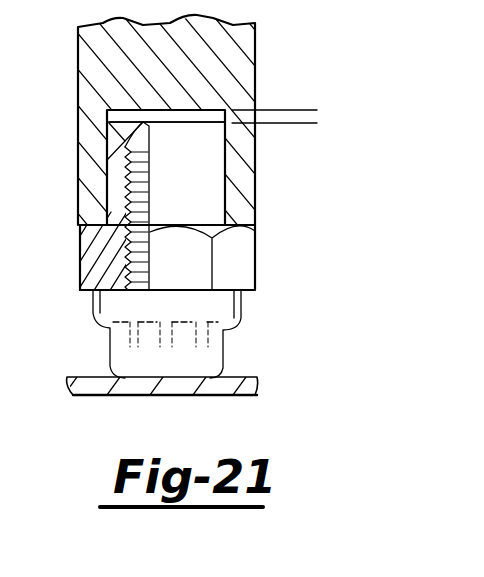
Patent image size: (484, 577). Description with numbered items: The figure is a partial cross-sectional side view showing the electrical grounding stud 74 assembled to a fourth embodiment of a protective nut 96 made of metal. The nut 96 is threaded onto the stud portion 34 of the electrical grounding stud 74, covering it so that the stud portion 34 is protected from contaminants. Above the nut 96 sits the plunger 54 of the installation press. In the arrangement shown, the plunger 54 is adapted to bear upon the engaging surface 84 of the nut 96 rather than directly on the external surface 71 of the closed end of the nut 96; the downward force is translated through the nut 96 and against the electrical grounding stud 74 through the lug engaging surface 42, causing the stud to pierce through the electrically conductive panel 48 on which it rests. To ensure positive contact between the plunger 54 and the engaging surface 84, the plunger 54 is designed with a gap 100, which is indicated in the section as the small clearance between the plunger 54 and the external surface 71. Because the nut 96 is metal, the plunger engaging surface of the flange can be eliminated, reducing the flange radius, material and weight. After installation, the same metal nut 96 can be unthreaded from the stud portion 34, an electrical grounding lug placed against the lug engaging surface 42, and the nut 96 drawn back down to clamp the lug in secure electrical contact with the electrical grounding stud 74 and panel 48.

The plunger 54 is at (232, 45).
The gap 100 is at (300, 62).
The external surface 71 is at (177, 123).
The stud portion 34 is at (108, 210).
The engaging surface 84 is at (84, 270).
The nut 96 is at (230, 259).
The electrical grounding stud 74 is at (252, 330).
The lug engaging surface 42 is at (109, 289).
The panel 48 is at (247, 380).